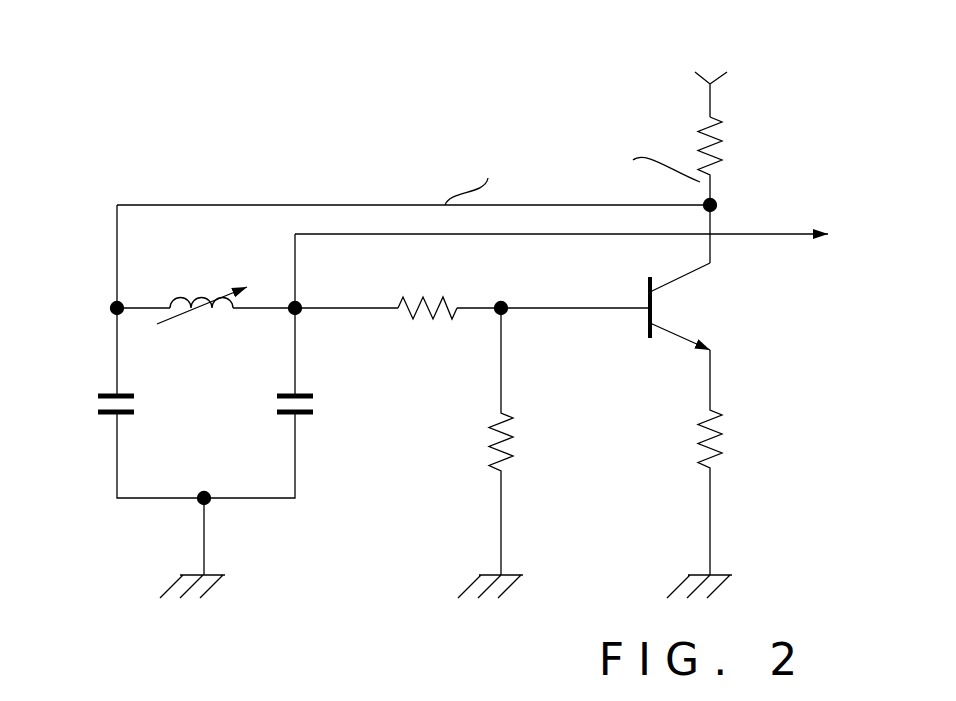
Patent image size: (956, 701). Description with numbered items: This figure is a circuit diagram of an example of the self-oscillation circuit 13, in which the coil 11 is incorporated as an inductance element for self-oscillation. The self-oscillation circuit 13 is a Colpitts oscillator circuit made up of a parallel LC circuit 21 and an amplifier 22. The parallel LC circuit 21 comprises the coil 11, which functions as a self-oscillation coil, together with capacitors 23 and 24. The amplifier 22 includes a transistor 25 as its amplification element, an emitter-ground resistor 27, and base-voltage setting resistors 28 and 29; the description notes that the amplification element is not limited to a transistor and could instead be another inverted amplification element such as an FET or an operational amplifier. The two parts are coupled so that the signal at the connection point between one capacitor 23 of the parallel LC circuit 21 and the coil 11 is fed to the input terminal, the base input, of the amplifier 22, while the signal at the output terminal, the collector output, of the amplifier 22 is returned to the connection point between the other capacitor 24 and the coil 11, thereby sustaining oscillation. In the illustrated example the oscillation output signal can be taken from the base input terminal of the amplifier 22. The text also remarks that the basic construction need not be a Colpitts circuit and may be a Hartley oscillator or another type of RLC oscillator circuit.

The self-oscillation circuit 13 is at (450, 120).
The coil 11 is at (193, 287).
The parallel LC circuit 21 is at (85, 452).
The amplifier 22 is at (617, 410).
The capacitor 23 is at (310, 391).
The capacitor 24 is at (133, 391).
The transistor 25 is at (710, 298).
The emitter-ground resistor 27 is at (710, 437).
The base-voltage setting resistor 28 is at (432, 300).
The base-voltage setting resistor 29 is at (502, 413).